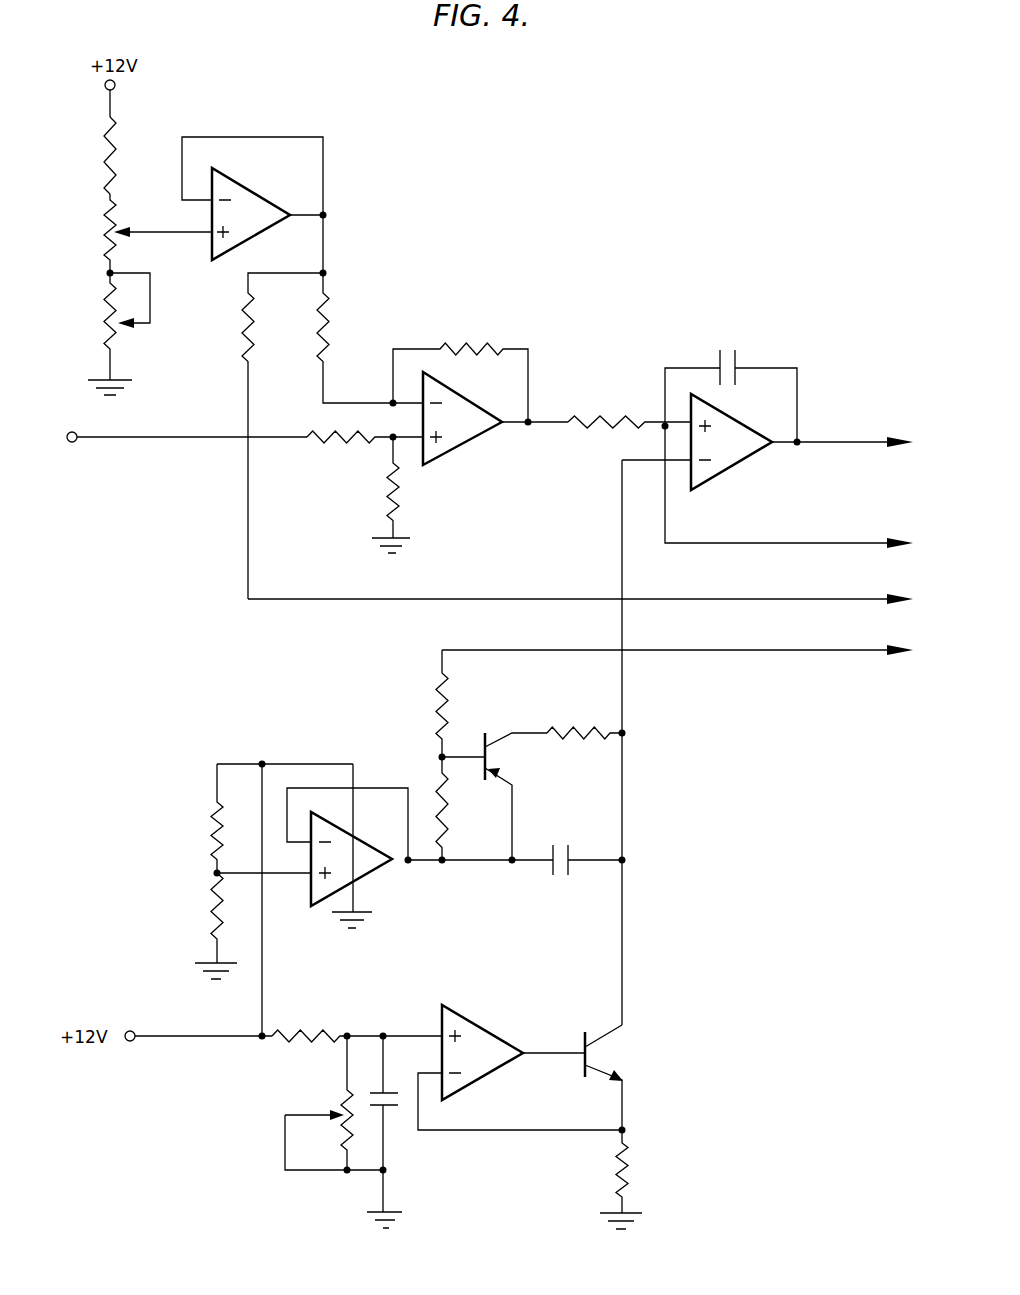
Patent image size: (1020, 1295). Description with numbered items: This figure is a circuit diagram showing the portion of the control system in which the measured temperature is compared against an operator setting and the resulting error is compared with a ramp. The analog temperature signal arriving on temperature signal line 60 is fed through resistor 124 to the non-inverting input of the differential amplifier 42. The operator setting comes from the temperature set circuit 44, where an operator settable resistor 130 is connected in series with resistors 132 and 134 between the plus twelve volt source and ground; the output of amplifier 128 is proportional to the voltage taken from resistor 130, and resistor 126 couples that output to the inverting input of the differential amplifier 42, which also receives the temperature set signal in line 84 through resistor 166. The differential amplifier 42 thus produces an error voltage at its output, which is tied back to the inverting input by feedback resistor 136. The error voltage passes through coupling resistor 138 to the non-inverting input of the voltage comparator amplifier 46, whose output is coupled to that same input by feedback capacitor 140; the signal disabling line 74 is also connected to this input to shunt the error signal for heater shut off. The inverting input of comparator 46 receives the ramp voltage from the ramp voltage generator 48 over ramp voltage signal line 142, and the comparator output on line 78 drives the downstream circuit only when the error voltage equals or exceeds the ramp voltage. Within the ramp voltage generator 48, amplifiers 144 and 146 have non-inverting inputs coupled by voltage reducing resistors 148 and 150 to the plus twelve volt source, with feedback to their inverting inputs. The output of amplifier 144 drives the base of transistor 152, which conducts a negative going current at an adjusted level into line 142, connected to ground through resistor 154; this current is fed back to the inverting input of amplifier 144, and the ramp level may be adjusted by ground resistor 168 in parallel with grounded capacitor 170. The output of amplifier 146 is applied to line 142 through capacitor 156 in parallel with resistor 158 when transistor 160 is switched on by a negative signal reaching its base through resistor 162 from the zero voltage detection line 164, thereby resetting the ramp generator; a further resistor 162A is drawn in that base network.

The temperature set circuit 44 is at (270, 92).
The resistor 132 is at (115, 137).
The operator settable resistor 130 is at (99, 229).
The resistor 134 is at (103, 303).
The amplifier 128 is at (250, 200).
The resistor 166 is at (239, 327).
The resistor 126 is at (341, 313).
The temperature signal line 60 is at (131, 440).
The resistor 124 is at (323, 447).
The differential amplifier 42 is at (462, 437).
The feedback resistor 136 is at (484, 345).
The coupling resistor 138 is at (592, 418).
The voltage comparator amplifier 46 is at (750, 437).
The feedback capacitor 140 is at (737, 360).
The line 78 is at (845, 441).
The signal disabling line 74 is at (866, 533).
The line 84 is at (813, 598).
The zero voltage detection line 164 is at (795, 653).
The ramp voltage signal line 142 is at (623, 900).
The ramp voltage generator 48 is at (218, 728).
The resistor 162 is at (452, 691).
The resistor 162A is at (452, 817).
The transistor 160 is at (515, 757).
The resistor 158 is at (572, 732).
The capacitor 156 is at (570, 872).
The amplifier 146 is at (375, 847).
The voltage reducing resistor 150 is at (213, 826).
The voltage reducing resistor 148 is at (297, 1025).
The ground resistor 168 is at (343, 1100).
The grounded capacitor 170 is at (392, 1108).
The amplifier 144 is at (502, 1058).
The transistor 152 is at (613, 1052).
The resistor 154 is at (627, 1160).